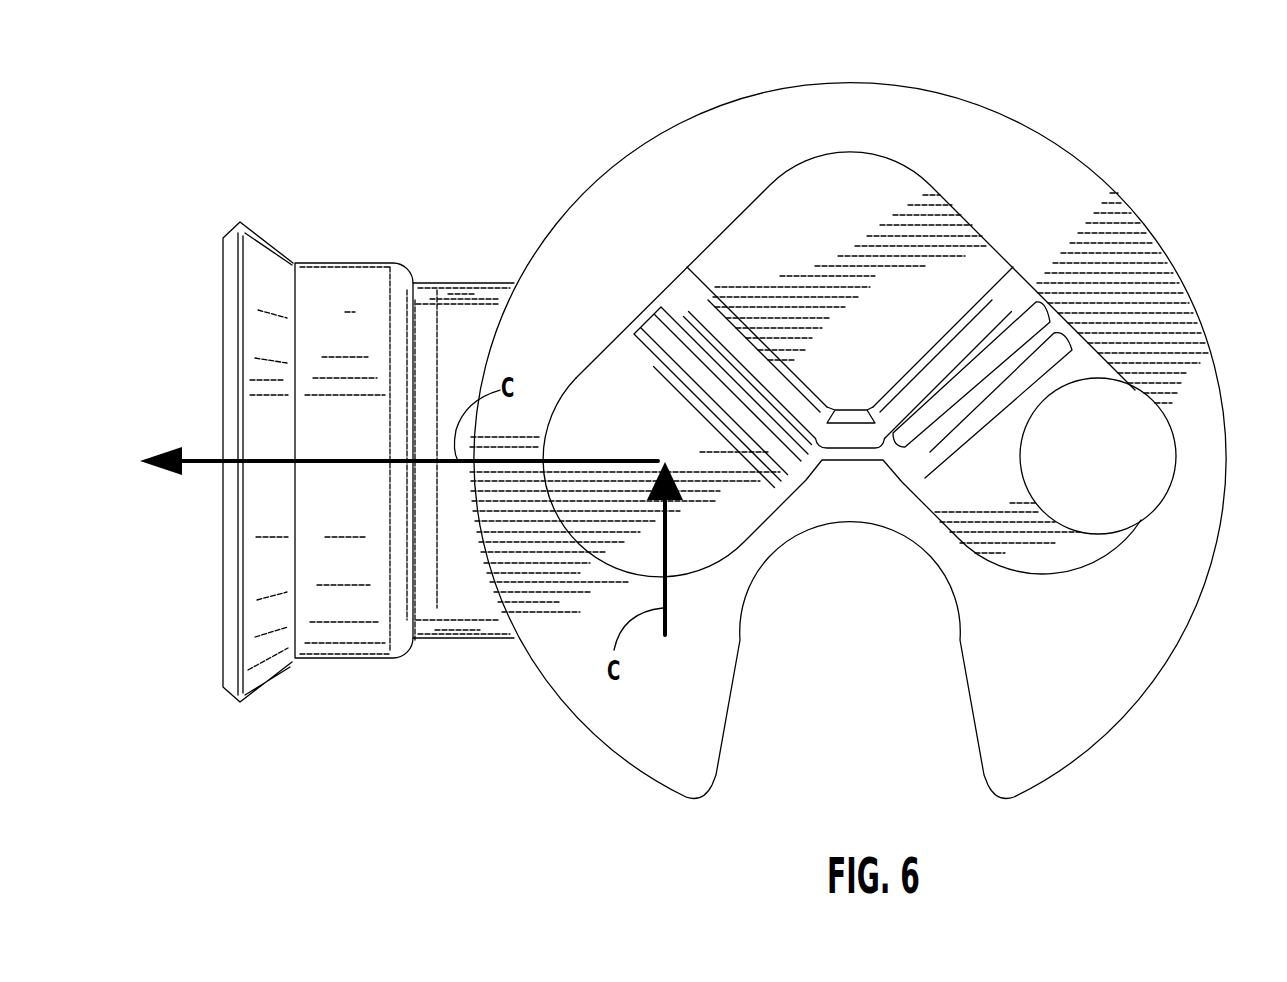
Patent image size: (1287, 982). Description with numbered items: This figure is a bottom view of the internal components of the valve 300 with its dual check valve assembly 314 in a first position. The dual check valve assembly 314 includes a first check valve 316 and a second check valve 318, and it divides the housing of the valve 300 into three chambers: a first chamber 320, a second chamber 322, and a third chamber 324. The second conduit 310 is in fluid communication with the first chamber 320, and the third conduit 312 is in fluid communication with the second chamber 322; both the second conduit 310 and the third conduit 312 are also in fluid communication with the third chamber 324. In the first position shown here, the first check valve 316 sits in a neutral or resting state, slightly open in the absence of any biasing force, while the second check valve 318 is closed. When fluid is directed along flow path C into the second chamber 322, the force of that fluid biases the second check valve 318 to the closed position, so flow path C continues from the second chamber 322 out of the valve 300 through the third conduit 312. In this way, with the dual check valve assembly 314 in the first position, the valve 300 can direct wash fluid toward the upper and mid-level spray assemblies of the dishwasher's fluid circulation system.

The valve 300 is at (592, 97).
The second conduit 310 is at (1103, 537).
The third conduit 312 is at (350, 283).
The dual check valve assembly 314 is at (945, 357).
The first check valve 316 is at (942, 447).
The second check valve 318 is at (698, 373).
The first chamber 320 is at (1018, 562).
The second chamber 322 is at (716, 541).
The third chamber 324 is at (825, 179).